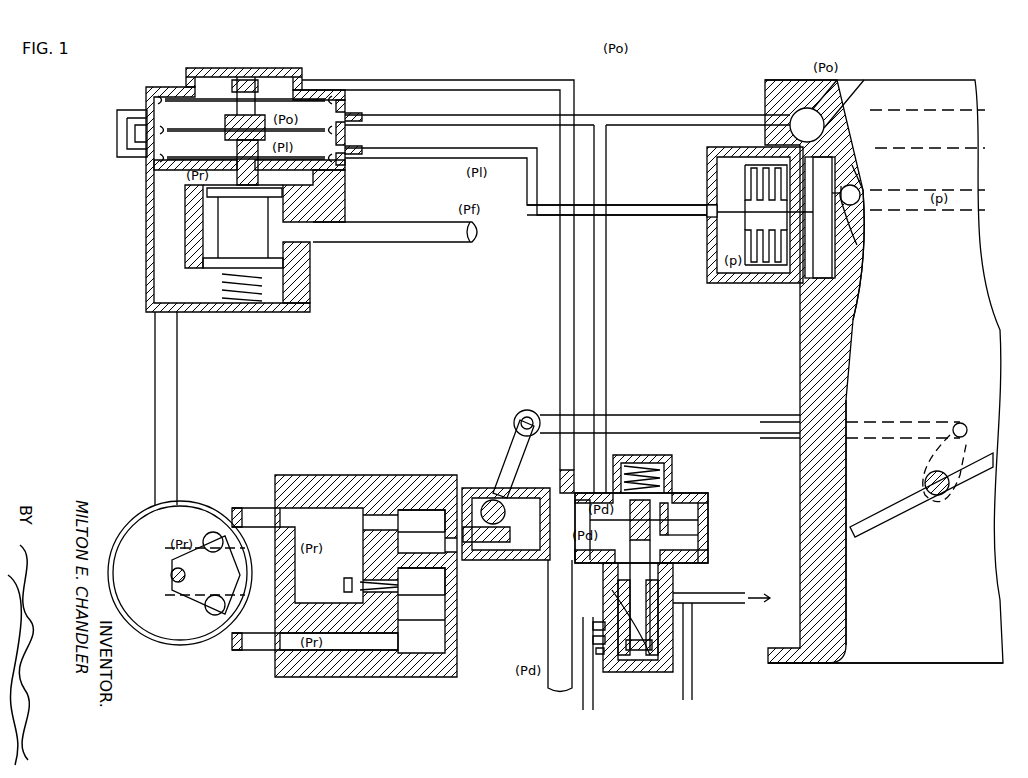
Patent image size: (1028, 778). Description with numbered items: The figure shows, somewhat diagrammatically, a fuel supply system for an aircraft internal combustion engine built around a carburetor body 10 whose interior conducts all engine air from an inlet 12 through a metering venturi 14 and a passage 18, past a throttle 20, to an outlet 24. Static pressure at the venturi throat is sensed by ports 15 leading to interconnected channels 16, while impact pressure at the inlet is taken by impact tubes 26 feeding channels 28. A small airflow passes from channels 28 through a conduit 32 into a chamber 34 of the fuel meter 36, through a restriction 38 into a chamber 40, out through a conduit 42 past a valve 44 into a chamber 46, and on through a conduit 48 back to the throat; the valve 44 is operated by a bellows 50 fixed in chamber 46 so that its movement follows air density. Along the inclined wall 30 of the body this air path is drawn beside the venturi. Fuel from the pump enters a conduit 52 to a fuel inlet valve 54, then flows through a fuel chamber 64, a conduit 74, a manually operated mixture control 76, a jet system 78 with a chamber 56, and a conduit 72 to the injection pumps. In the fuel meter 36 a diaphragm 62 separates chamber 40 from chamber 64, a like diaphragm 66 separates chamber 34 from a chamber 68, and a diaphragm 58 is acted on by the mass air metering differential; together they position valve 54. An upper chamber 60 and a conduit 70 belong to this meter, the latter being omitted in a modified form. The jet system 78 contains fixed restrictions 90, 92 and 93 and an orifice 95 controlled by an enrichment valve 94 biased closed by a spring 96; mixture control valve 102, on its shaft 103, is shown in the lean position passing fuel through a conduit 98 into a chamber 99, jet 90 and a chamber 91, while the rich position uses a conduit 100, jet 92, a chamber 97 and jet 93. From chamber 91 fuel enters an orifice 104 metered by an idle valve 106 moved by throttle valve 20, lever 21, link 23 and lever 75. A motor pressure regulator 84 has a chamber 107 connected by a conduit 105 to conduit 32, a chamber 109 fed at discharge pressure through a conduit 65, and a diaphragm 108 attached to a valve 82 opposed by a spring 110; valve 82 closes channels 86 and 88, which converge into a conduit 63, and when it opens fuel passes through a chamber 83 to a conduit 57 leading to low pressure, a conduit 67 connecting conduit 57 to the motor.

The body 10 is at (800, 372).
The inlet 12 is at (913, 106).
The metering venturi 14 is at (845, 190).
The ports 15 is at (861, 196).
The interconnected channels 16 is at (858, 207).
The passage 18 is at (947, 334).
The throttle 20 is at (972, 475).
The lever 21 is at (964, 432).
The link 23 is at (902, 422).
The outlet 24 is at (951, 654).
The impact tubes 26 is at (848, 106).
The interconnected channels 28 is at (807, 125).
The inclined wall 30 is at (849, 148).
The conduit 32 is at (700, 118).
The chamber 34 is at (323, 119).
The fuel meter 36 is at (141, 234).
The restriction 38 is at (117, 131).
The chamber 40 is at (332, 150).
The conduit 42 is at (444, 158).
The valve 44 is at (712, 218).
The chamber 46 is at (755, 215).
The conduit 48 is at (855, 235).
The bellows 50 is at (766, 222).
The conduit 52 is at (432, 223).
The fuel inlet valve 54 is at (218, 230).
The chamber 56 is at (532, 521).
The conduit 57 is at (722, 593).
The diaphragm 58 is at (196, 135).
The upper chamber 60 is at (270, 70).
The diaphragm 62 is at (208, 156).
The conduit 63 is at (583, 700).
The fuel chamber 64 is at (268, 172).
The conduit 65 is at (578, 528).
The diaphragm 66 is at (205, 96).
The conduit 67 is at (693, 690).
The chamber 68 is at (260, 84).
The conduit 70 is at (566, 82).
The conduit 72 is at (548, 636).
The conduit 74 is at (155, 382).
The lever 75 is at (514, 424).
The mixture control 76 is at (137, 508).
The jet system 78 is at (462, 490).
The valve 82 is at (626, 662).
The chamber 83 is at (652, 657).
The motor pressure regulator 84 is at (722, 518).
The channel 86 is at (594, 620).
The channel 88 is at (601, 657).
The jet 90 is at (372, 526).
The chamber 91 is at (430, 531).
The jet 92 is at (380, 646).
The jet 93 is at (421, 543).
The enrichment valve 94 is at (421, 581).
The orifice 95 is at (398, 604).
The spring 96 is at (352, 594).
The chamber 97 is at (430, 645).
The conduit 98 is at (248, 510).
The chamber 99 is at (325, 595).
The conduit 100 is at (244, 652).
The mixture control valve 102 is at (195, 612).
The shaft 103 is at (170, 575).
The orifice 104 is at (470, 545).
The conduit 105 is at (606, 328).
The idle valve 106 is at (553, 560).
The chamber 107 is at (665, 575).
The diaphragm 108 is at (700, 493).
The chamber 109 is at (684, 545).
The spring 110 is at (668, 466).